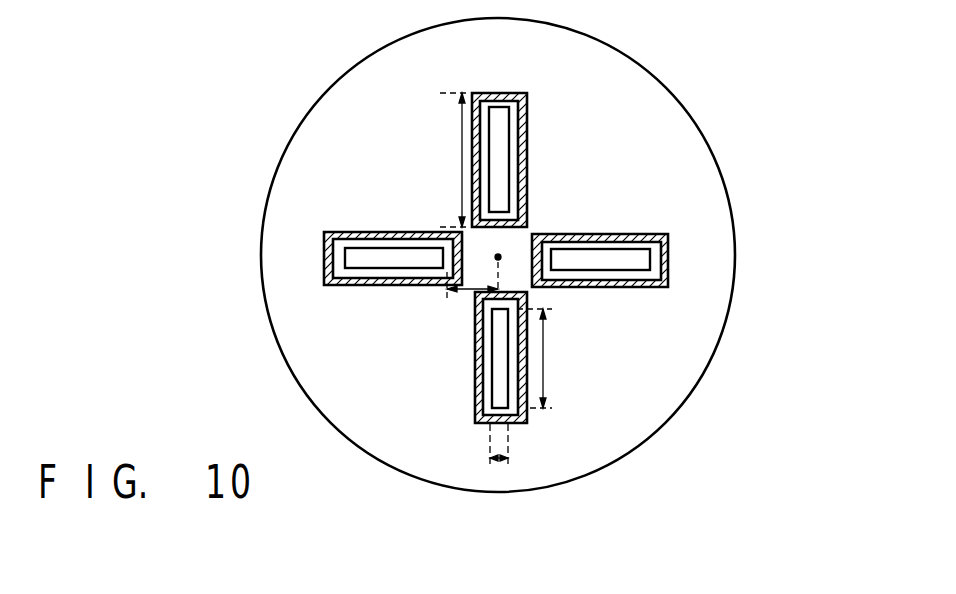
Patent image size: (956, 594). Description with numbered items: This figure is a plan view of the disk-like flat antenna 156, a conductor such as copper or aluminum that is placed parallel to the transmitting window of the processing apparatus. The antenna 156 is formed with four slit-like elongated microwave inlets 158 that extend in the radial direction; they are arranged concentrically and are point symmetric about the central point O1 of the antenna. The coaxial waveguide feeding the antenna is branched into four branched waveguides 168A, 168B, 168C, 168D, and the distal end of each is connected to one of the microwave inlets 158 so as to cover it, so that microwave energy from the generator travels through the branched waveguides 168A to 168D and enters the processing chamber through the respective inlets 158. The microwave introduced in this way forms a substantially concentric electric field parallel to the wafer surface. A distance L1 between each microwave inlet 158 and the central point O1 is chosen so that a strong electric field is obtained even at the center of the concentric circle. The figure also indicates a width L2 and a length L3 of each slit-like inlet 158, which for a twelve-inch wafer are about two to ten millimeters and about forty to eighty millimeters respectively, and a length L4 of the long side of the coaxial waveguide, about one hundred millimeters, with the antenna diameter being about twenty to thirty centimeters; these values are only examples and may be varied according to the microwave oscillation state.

The flat antenna 156 is at (666, 423).
The microwave inlets 158 is at (494, 106).
The branched waveguide 168A is at (372, 286).
The branched waveguide 168B is at (528, 418).
The branched waveguide 168C is at (627, 288).
The branched waveguide 168D is at (529, 150).
The central point O1 is at (503, 253).
The distance L1 is at (466, 293).
The width L2 is at (499, 463).
The length L3 is at (550, 358).
The length of long side L4 is at (442, 160).